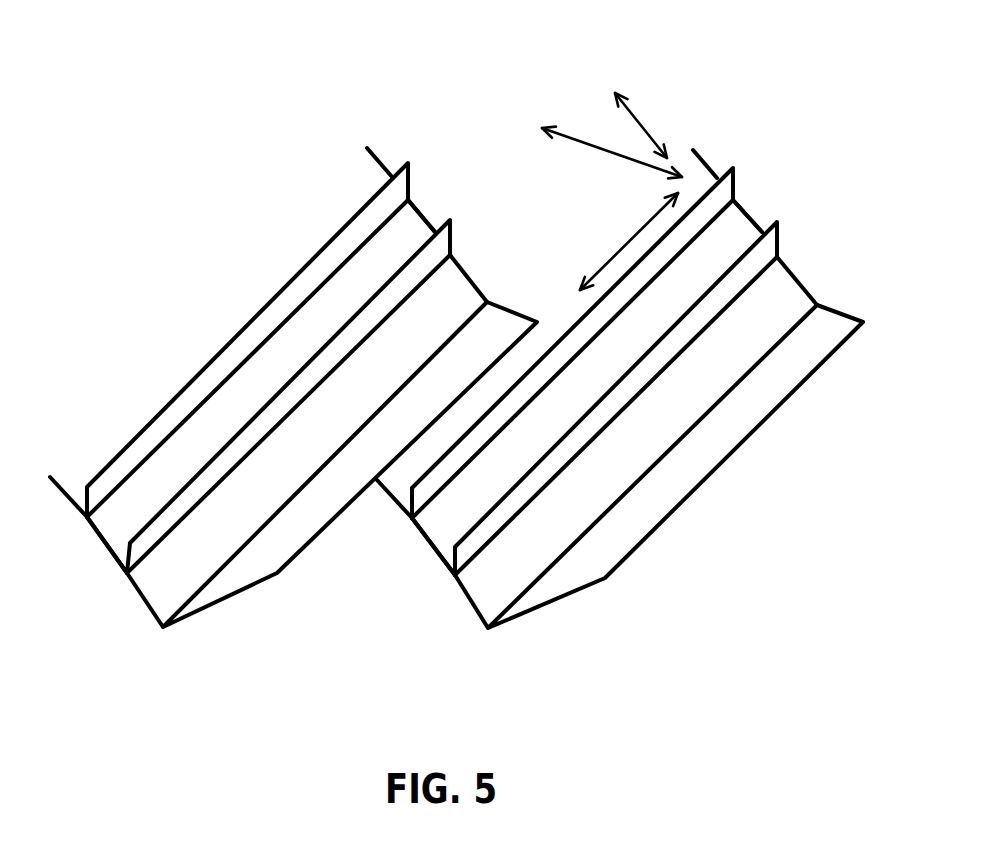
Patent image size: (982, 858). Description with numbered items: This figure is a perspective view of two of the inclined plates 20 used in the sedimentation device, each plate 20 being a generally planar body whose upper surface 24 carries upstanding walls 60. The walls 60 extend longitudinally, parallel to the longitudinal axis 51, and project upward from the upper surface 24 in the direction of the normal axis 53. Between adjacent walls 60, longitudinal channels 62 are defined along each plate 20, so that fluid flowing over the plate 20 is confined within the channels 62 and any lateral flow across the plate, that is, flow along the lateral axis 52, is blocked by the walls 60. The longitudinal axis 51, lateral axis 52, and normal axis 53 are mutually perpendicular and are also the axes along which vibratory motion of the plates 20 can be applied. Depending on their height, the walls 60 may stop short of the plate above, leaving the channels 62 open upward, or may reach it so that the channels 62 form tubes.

The inclined plate 20 is at (268, 548).
The upper surface 24 is at (288, 343).
The longitudinal axis 51 is at (613, 248).
The lateral axis 52 is at (642, 118).
The normal axis 53 is at (577, 132).
The wall 60 is at (348, 220).
The longitudinal channel 62 is at (407, 227).